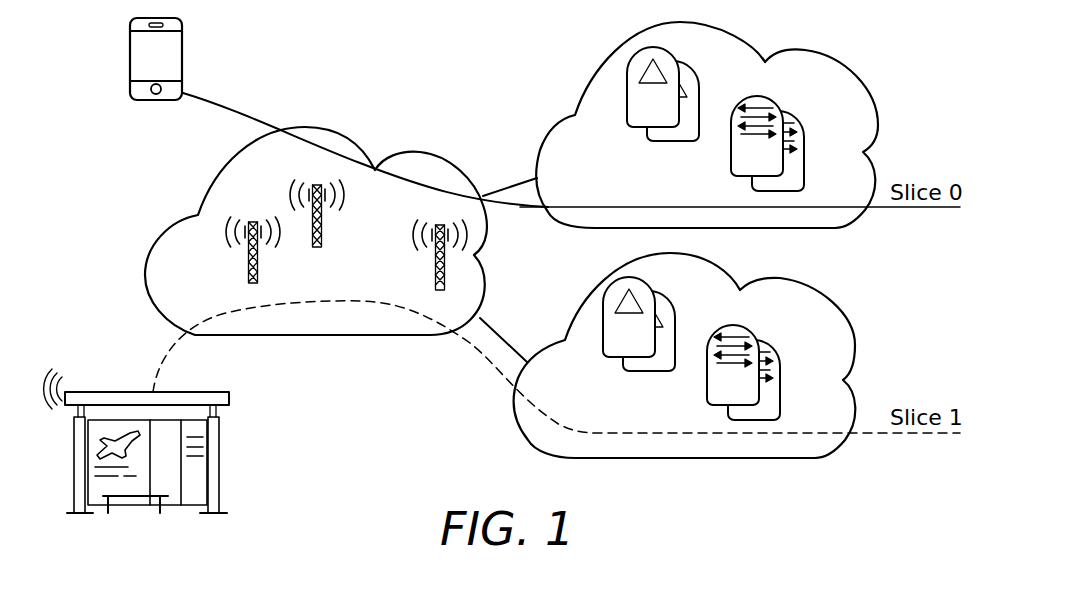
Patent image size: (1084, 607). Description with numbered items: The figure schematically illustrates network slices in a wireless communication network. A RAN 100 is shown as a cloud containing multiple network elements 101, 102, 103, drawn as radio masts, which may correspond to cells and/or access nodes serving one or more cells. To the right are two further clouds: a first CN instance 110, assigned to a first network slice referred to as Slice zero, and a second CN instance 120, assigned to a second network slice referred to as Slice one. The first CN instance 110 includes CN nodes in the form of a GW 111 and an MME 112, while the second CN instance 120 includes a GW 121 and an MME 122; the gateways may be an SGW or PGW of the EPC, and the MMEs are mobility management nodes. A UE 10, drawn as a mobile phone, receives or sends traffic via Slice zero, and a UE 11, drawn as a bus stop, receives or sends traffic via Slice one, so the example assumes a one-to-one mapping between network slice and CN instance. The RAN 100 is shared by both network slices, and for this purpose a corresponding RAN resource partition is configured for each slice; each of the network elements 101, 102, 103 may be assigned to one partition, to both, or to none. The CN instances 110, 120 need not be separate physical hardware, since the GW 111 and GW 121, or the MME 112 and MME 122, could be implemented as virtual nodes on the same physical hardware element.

The UE 10 is at (130, 44).
The UE 11 is at (222, 475).
The RAN 100 is at (176, 222).
The network element 101 is at (248, 266).
The network element 102 is at (436, 278).
The network element 103 is at (322, 236).
The first CN instance 110 is at (569, 114).
The GW 111 is at (731, 162).
The MME 112 is at (630, 125).
The second CN instance 120 is at (852, 332).
The GW 121 is at (707, 393).
The MME 122 is at (606, 360).